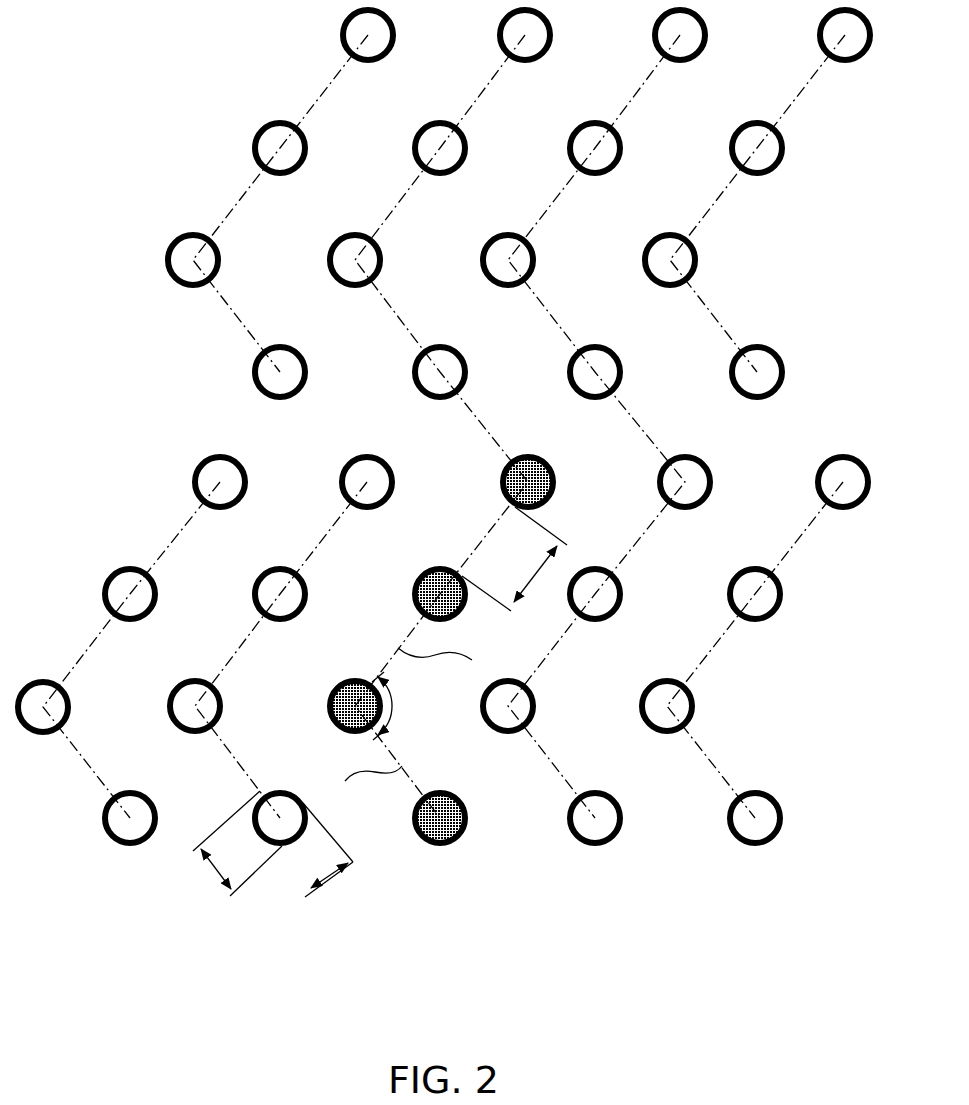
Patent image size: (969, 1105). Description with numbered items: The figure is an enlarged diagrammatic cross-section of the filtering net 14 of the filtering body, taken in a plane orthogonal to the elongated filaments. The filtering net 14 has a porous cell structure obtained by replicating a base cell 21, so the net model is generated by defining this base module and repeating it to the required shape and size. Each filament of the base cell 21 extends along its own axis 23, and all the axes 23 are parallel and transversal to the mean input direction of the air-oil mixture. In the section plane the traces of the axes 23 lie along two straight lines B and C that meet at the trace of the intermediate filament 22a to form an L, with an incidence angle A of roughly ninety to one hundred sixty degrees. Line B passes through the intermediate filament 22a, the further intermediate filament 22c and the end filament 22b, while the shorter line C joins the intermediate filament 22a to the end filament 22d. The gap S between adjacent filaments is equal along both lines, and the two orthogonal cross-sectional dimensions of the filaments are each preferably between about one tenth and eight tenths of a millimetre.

The filtering net 14 is at (802, 860).
The base cell 21 is at (458, 850).
The intermediate filament 22a is at (352, 679).
The end filament 22b is at (528, 456).
The further intermediate filament 22c is at (445, 567).
The end filament 22d is at (470, 818).
The axis 23 is at (549, 458).